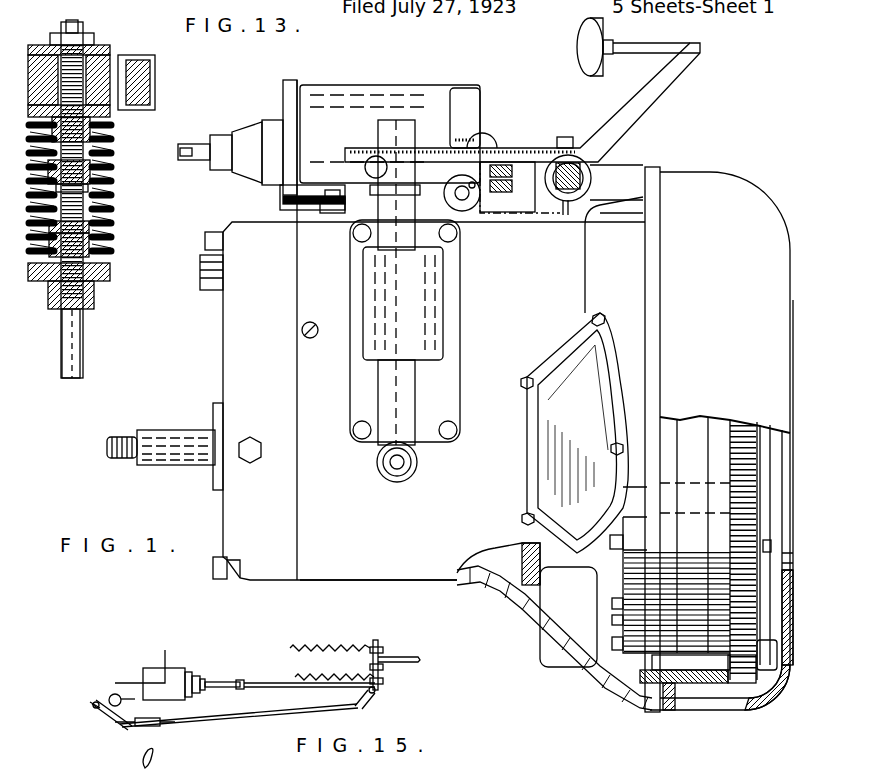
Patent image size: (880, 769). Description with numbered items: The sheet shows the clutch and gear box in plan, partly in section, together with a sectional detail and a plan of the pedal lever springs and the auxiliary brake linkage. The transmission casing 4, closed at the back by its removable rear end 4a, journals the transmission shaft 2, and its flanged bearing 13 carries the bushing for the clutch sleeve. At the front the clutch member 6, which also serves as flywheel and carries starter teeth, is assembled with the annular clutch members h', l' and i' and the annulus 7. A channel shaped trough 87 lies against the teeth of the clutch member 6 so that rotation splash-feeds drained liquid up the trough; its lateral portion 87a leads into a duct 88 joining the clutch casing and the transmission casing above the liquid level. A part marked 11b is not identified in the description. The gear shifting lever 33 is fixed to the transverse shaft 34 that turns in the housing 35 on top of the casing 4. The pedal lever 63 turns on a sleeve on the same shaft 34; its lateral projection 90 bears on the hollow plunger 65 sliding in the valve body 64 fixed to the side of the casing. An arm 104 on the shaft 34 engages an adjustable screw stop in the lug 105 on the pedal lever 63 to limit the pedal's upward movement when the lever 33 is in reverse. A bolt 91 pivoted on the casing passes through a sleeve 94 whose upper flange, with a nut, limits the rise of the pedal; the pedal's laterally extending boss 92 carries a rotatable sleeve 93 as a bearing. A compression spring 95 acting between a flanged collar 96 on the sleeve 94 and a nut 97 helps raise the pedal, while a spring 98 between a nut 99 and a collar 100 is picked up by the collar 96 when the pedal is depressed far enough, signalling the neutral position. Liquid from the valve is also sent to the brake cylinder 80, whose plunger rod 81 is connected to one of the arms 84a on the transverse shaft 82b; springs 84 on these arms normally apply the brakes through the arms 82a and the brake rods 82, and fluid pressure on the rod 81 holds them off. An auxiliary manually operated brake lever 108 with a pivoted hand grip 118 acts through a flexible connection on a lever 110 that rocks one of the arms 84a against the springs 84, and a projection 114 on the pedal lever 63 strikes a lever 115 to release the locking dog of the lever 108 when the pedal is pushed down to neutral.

In FIG. 13, the bolt 91 is at (95, 30).
In FIG. 1, the bolt 91 is at (466, 213).
In FIG. 13, the sleeve 93 is at (112, 50).
In FIG. 1, the sleeve 93 is at (498, 195).
In FIG. 13, the pedal lever 63 is at (148, 68).
In FIG. 1, the pedal lever 63 is at (608, 40).
In FIG. 15, the pedal lever 63 is at (118, 694).
In FIG. 13, the laterally extending boss 92 is at (100, 90).
In FIG. 1, the laterally extending boss 92 is at (446, 188).
In FIG. 13, the flanged collar 96 is at (92, 120).
In FIG. 13, the sleeve 94 is at (92, 158).
In FIG. 13, the collar 100 is at (90, 172).
In FIG. 13, the spring 98 is at (92, 222).
In FIG. 13, the nut 99 is at (95, 240).
In FIG. 13, the compression spring 95 is at (112, 263).
In FIG. 13, the nut 97 is at (95, 288).
In FIG. 1, the brake cylinder 80 is at (345, 100).
In FIG. 15, the brake cylinder 80 is at (172, 670).
In FIG. 1, the transverse shaft 34 is at (400, 122).
In FIG. 15, the transverse shaft 34 is at (167, 650).
In FIG. 1, the arm 104 is at (435, 150).
In FIG. 1, the lug 105 is at (482, 158).
In FIG. 1, the hollow plunger 65 is at (595, 170).
In FIG. 1, the valve body 64 is at (596, 183).
In FIG. 1, the lateral projection 90 is at (565, 200).
In FIG. 1, the plunger rod 81 is at (190, 160).
In FIG. 15, the plunger rod 81 is at (228, 682).
In FIG. 1, the housing 35 is at (440, 320).
In FIG. 1, the lever 33 is at (417, 465).
In FIG. 1, the transmission shaft 2 is at (195, 462).
In FIG. 1, the rear end of the casing 4a is at (268, 580).
In FIG. 1, the transmission casing 4 is at (358, 580).
In FIG. 1, the clutch member 6 is at (780, 692).
In FIG. 1, the clutch member i' is at (673, 500).
In FIG. 1, the clutch member l' is at (699, 515).
In FIG. 1, the clutch member h' is at (736, 527).
In FIG. 1, the duct 88 is at (575, 665).
In FIG. 1, the annulus 7 is at (612, 690).
In FIG. 1, the lateral portion of the trough 87a is at (660, 690).
In FIG. 1, the flanged bearing 13 is at (695, 688).
In FIG. 1, the support 11b is at (712, 690).
In FIG. 1, the channel shaped trough 87 is at (775, 690).
In FIG. 15, the lever 115 is at (97, 702).
In FIG. 15, the projection 114 is at (92, 708).
In FIG. 15, the auxiliary manually operated brake lever 108 is at (158, 726).
In FIG. 15, the pivoted hand grip 118 is at (140, 756).
In FIG. 15, the springs 84 is at (312, 677).
In FIG. 15, the transverse shaft 82b is at (383, 650).
In FIG. 15, the brake rods 82 is at (420, 660).
In FIG. 15, the arms 82a is at (384, 668).
In FIG. 15, the arms 84a is at (384, 682).
In FIG. 15, the lever 110 is at (368, 698).